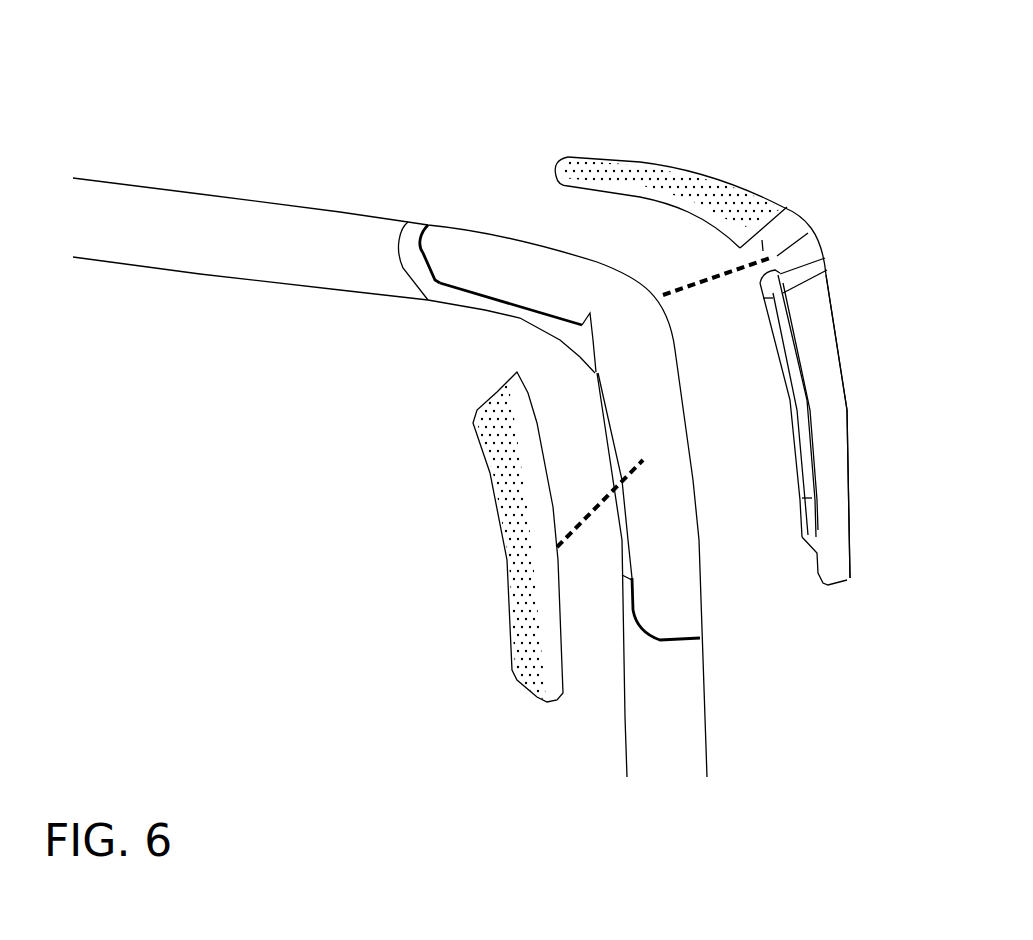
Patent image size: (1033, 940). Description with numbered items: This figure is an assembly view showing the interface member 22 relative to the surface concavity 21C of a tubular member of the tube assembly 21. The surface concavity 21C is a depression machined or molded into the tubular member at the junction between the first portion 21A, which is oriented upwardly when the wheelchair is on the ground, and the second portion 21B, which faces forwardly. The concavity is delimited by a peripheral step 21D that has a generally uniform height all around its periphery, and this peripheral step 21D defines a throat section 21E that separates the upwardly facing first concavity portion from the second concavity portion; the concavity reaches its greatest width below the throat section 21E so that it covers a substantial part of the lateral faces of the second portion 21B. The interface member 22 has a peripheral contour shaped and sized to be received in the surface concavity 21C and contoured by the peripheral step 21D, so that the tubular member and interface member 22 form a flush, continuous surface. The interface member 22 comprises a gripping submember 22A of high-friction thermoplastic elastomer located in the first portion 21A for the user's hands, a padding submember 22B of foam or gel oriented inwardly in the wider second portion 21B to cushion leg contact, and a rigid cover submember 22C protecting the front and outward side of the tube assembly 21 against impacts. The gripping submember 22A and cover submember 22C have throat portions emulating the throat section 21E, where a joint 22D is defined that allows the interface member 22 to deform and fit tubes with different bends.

The tube assembly 21 is at (439, 424).
The first portion 21A is at (233, 263).
The second portion 21B is at (683, 725).
The surface concavity 21C is at (523, 270).
The peripheral step 21D is at (423, 248).
The throat section 21E is at (563, 356).
The interface member 22 is at (593, 359).
The gripping submember 22A is at (683, 203).
The padding submember 22B is at (507, 513).
The cover submember 22C is at (828, 438).
The joint 22D is at (762, 270).